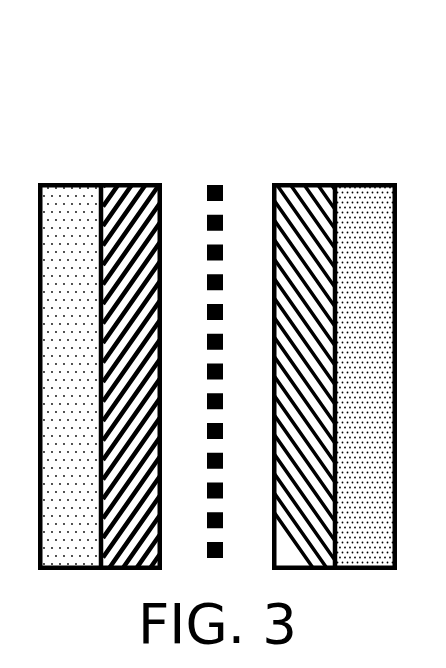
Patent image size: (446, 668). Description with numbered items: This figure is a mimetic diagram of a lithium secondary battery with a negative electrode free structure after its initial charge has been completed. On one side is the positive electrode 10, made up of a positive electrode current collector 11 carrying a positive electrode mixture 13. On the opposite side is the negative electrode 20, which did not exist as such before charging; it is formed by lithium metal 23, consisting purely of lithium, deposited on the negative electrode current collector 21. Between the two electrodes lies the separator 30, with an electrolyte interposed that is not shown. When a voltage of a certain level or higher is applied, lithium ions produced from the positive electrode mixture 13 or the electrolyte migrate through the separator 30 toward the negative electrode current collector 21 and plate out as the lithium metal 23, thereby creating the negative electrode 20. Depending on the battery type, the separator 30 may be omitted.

The positive electrode 10 is at (75, 43).
The positive electrode current collector 11 is at (73, 182).
The positive electrode mixture 13 is at (130, 182).
The negative electrode 20 is at (387, 43).
The negative electrode current collector 21 is at (363, 182).
The lithium metal 23 is at (303, 182).
The separator 30 is at (212, 183).